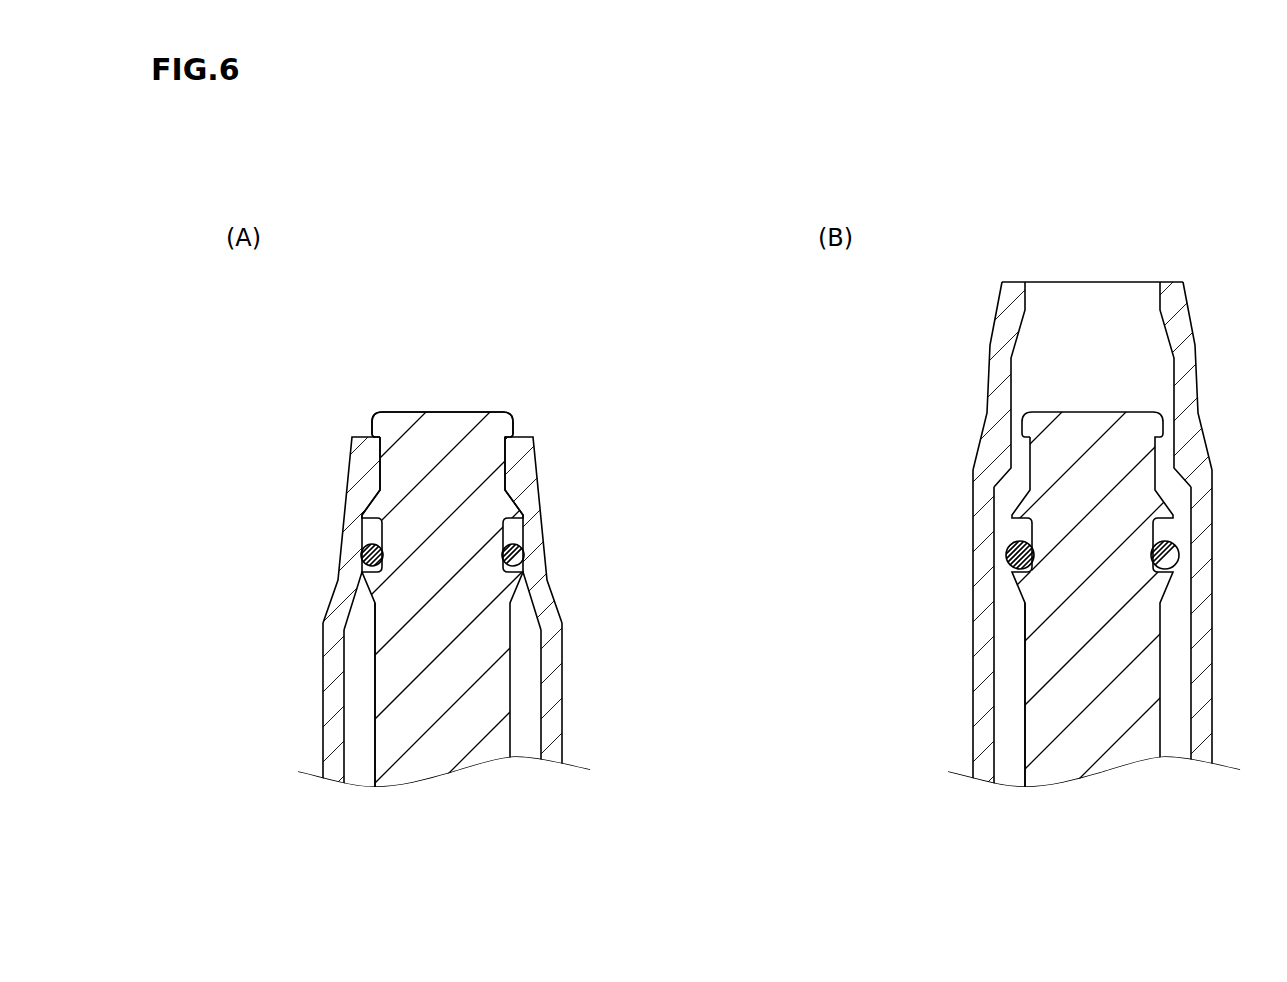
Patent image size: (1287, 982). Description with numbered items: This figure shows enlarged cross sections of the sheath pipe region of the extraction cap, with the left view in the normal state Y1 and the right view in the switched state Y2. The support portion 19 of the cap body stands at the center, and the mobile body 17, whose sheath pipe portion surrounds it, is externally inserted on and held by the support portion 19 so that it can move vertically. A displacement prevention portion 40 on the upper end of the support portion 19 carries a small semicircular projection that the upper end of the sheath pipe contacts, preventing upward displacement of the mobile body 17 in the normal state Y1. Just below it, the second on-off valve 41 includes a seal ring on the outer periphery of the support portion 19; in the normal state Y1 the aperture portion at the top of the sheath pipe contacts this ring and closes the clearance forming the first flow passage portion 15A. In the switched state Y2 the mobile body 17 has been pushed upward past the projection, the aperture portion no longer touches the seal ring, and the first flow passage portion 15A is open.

The displacement prevention portion 40 is at (370, 420).
The second on-off valve 41 is at (524, 556).
The first flow passage portion 15A is at (358, 668).
The mobile body 17 is at (563, 686).
The support portion 19 is at (430, 579).
The normal state Y1 is at (501, 375).
The switched state Y2 is at (1167, 257).